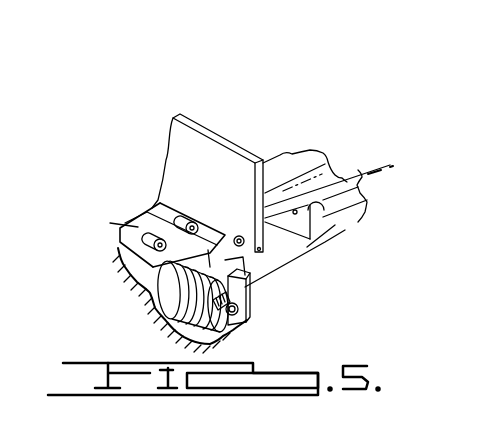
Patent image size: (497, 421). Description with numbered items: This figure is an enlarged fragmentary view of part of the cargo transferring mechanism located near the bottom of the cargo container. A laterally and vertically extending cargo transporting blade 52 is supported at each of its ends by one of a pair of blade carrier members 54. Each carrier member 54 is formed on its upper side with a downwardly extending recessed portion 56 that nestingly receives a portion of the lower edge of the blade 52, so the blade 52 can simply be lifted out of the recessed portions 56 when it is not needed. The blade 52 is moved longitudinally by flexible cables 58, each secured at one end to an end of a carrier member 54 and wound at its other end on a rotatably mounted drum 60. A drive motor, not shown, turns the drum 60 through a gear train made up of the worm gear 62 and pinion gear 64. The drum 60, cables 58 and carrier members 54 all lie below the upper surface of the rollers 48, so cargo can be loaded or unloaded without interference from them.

The rollers 48 is at (139, 224).
The cargo transporting blade 52 is at (216, 155).
The blade carrier members 54 is at (312, 256).
The recessed portions 56 is at (330, 203).
The flexible cables 58 is at (364, 186).
The drum 60 is at (236, 305).
The worm gear 62 is at (282, 297).
The pinion gear 64 is at (288, 303).